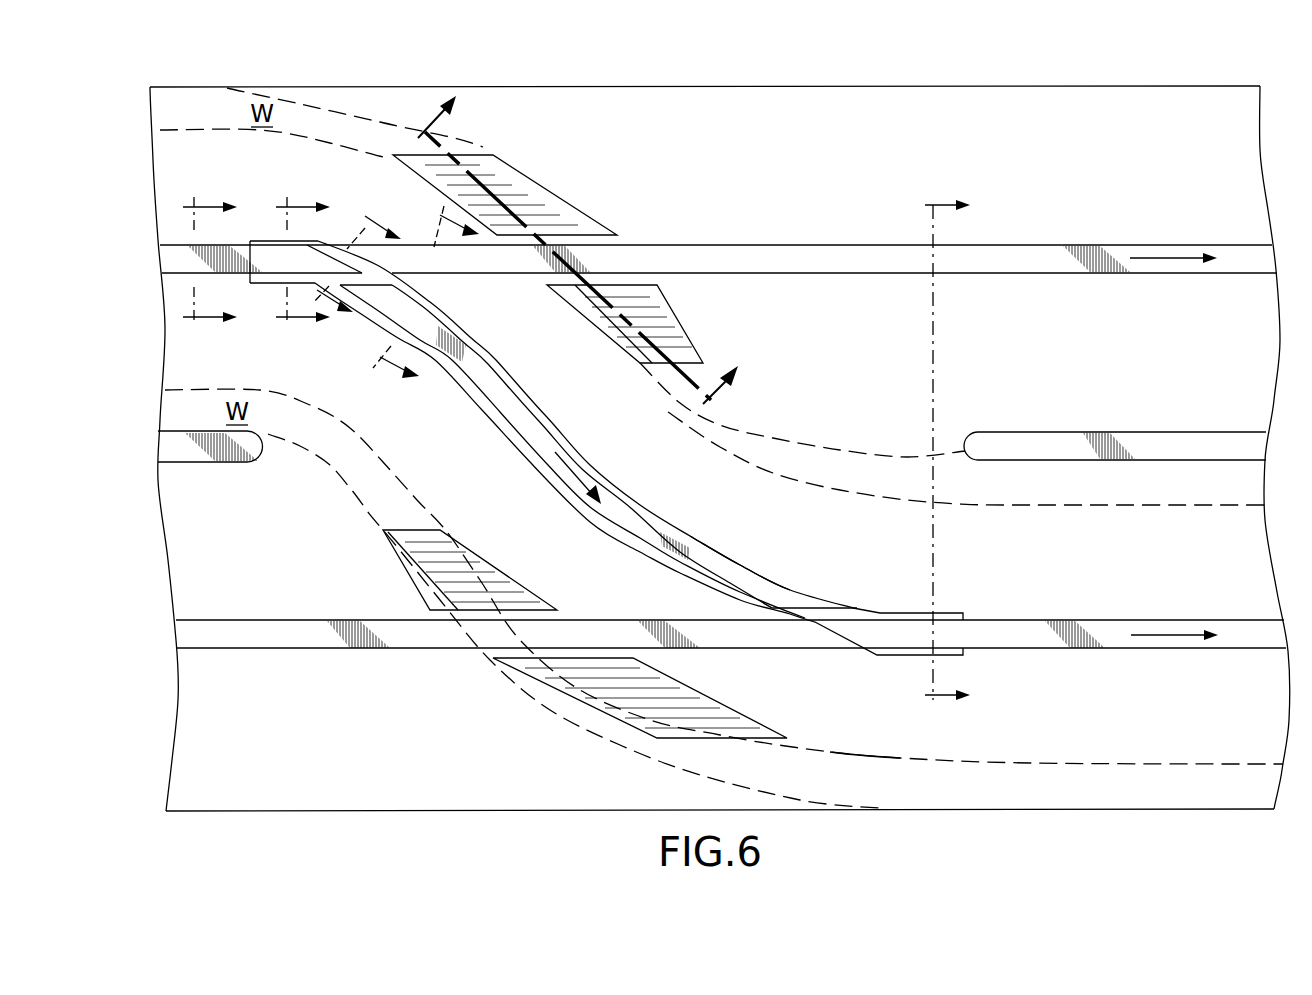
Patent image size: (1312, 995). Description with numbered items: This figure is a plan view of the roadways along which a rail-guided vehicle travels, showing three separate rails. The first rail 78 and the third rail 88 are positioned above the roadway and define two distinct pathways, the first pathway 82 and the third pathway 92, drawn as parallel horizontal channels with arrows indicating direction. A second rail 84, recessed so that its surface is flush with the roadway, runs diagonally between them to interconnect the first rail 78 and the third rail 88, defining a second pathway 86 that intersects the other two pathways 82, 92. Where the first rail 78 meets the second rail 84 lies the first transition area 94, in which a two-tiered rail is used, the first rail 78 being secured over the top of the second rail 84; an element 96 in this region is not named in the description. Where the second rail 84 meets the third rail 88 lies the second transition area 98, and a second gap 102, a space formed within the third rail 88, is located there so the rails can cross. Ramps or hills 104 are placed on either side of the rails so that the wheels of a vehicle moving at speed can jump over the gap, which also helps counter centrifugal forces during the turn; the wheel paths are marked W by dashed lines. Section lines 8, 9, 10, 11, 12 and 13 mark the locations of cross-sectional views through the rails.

The first rail 78 is at (797, 257).
The first pathway 82 is at (1172, 254).
The second rail 84 is at (753, 587).
The second pathway 86 is at (580, 472).
The third rail 88 is at (1029, 640).
The third pathway 92 is at (1165, 640).
The first transition area 94 is at (343, 195).
The upstream flap 96 is at (358, 268).
The second transition area 98 is at (875, 700).
The second gap 102 is at (848, 640).
The ramps or hills 104 is at (537, 200).
The section line 8- 8 is at (210, 262).
The section line 9- 9 is at (303, 262).
The section line 10- 10 is at (357, 269).
The section line 11- 11 is at (421, 301).
The section line 12- 12 is at (945, 448).
The section line 13- 13 is at (595, 250).